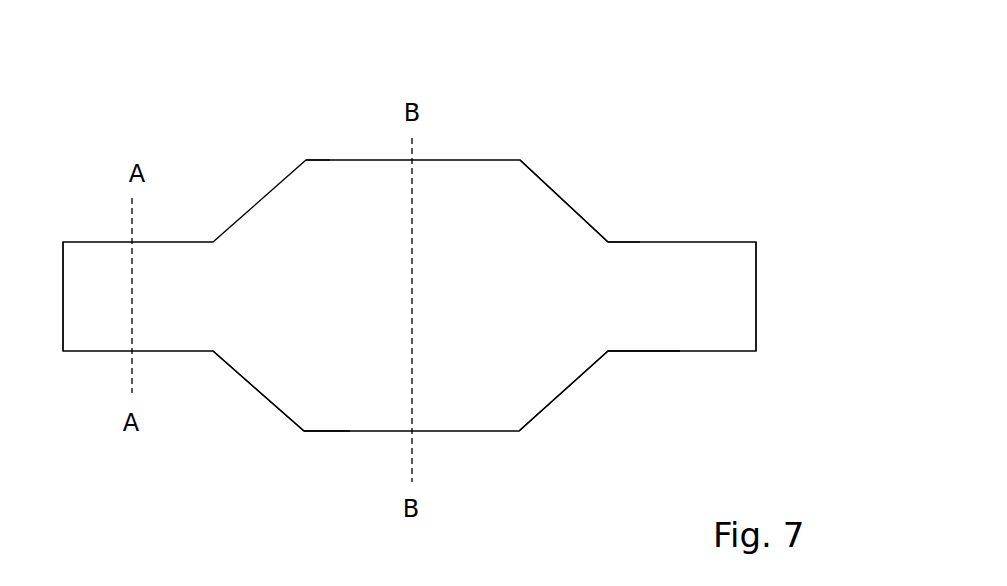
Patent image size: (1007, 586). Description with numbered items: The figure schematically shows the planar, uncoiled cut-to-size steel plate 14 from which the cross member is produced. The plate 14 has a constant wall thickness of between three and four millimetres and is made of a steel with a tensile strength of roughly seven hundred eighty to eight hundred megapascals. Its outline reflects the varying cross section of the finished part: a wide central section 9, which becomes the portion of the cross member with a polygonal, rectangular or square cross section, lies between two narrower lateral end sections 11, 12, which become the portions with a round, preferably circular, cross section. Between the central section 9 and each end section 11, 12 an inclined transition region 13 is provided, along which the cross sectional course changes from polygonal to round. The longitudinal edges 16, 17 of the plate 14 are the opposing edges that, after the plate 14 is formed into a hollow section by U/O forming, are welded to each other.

The central section 9 is at (462, 158).
The end section 11 is at (84, 240).
The end section 12 is at (730, 240).
The transition region 13 is at (255, 388).
The cut-to-size steel plate 14 is at (545, 218).
The edge 16 is at (325, 160).
The edge 17 is at (348, 431).